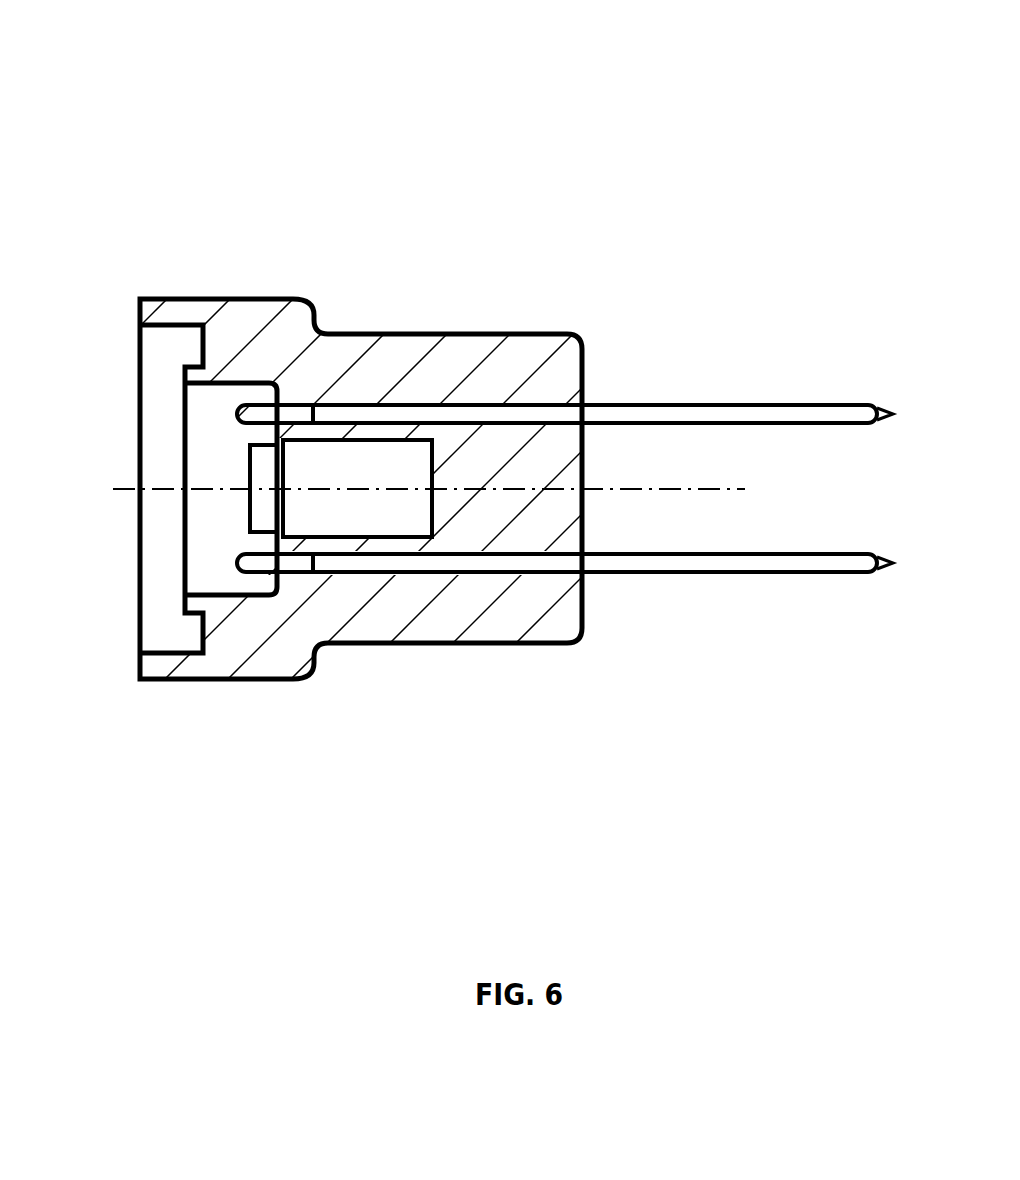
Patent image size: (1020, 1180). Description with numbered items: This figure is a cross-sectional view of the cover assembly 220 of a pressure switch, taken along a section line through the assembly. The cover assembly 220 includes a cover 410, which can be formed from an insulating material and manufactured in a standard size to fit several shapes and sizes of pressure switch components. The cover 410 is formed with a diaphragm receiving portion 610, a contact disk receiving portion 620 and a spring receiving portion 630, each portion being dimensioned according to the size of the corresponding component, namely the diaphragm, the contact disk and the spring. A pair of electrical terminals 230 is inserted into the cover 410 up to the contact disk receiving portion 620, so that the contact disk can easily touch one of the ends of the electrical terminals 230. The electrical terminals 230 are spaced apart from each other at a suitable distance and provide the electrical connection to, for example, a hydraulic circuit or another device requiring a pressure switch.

The cover assembly 220 is at (784, 86).
The cover 410 is at (452, 334).
The diaphragm receiving portion 610 is at (158, 570).
The contact disk receiving portion 620 is at (212, 402).
The spring receiving portion 630 is at (380, 523).
The electrical terminals 230 is at (842, 429).